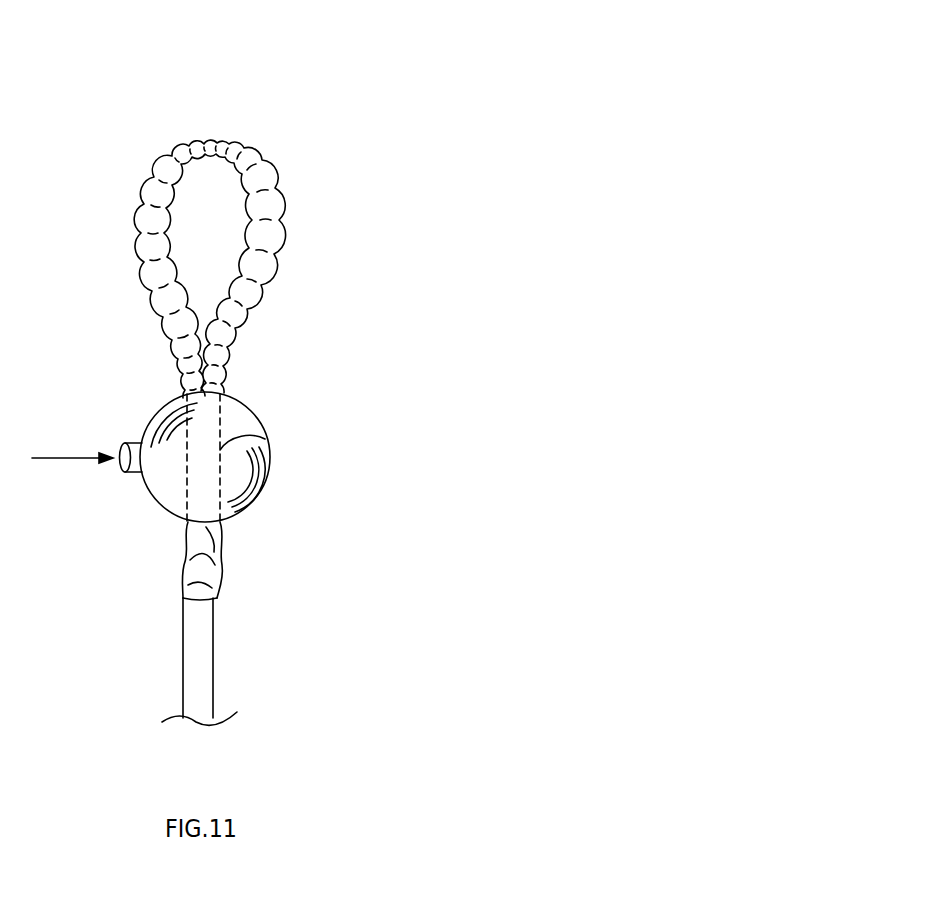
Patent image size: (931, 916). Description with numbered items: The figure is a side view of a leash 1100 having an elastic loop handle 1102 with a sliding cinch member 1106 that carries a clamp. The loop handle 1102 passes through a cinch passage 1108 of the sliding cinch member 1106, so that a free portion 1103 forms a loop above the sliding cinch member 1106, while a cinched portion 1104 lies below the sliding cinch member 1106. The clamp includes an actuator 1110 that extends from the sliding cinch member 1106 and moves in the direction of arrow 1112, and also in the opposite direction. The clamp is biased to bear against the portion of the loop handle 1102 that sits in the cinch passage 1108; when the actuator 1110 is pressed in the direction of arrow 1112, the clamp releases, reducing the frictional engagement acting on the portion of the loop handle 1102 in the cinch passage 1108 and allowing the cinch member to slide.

The leash 1100 is at (597, 43).
The elastic loop handle 1102 is at (262, 153).
The free portion 1103 is at (284, 240).
The cinched portion 1104 is at (222, 555).
The sliding cinch member 1106 is at (253, 417).
The cinch passage 1108 is at (265, 439).
The actuator 1110 is at (135, 442).
The arrow 1112 is at (55, 458).